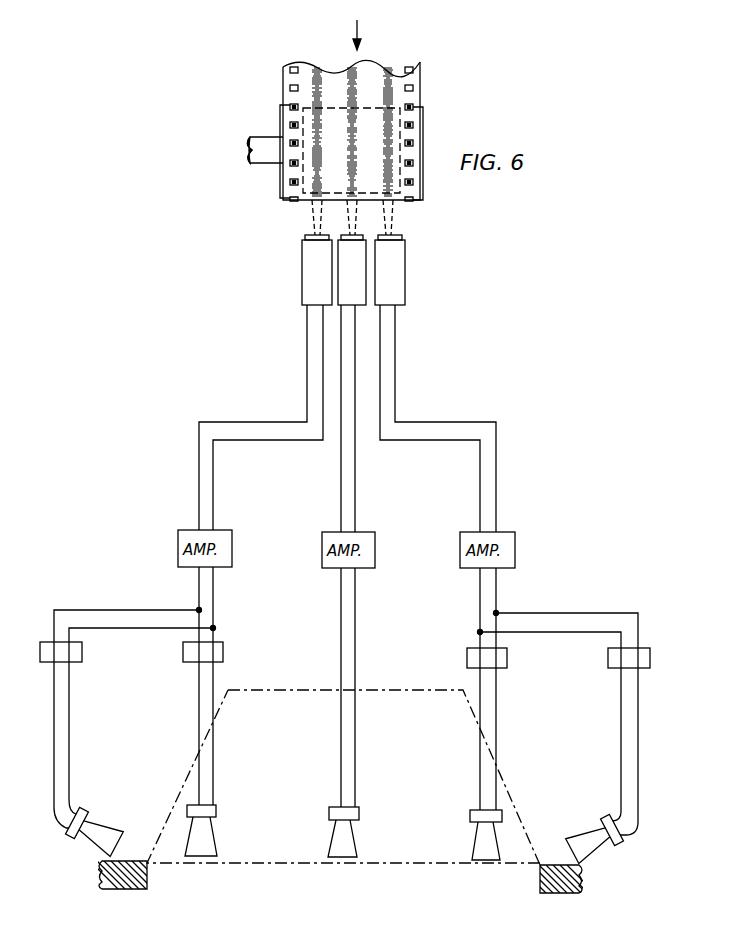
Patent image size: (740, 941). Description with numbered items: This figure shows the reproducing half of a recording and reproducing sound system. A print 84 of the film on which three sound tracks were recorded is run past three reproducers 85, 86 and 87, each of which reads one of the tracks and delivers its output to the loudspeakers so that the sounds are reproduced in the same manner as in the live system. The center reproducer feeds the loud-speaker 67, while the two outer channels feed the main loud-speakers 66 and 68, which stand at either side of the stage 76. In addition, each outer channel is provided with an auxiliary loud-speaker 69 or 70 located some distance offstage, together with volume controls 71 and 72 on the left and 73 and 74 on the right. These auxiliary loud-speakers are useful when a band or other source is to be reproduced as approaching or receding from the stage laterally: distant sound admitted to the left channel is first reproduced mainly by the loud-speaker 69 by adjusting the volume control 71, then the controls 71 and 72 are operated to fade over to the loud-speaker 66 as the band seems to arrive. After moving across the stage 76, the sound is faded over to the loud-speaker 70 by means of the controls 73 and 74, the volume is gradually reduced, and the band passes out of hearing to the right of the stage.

The print 84 is at (420, 78).
The reproducer 85 is at (302, 269).
The reproducer 86 is at (352, 252).
The reproducer 87 is at (405, 268).
The volume control 71 is at (82, 651).
The volume control 72 is at (223, 652).
The volume control 73 is at (467, 658).
The volume control 74 is at (608, 658).
The main loud-speaker 66 is at (212, 828).
The loud-speaker 67 is at (352, 831).
The main loud-speaker 68 is at (478, 831).
The auxiliary loud-speaker 69 is at (104, 826).
The auxiliary loud-speaker 70 is at (585, 833).
The stage 76 is at (343, 777).